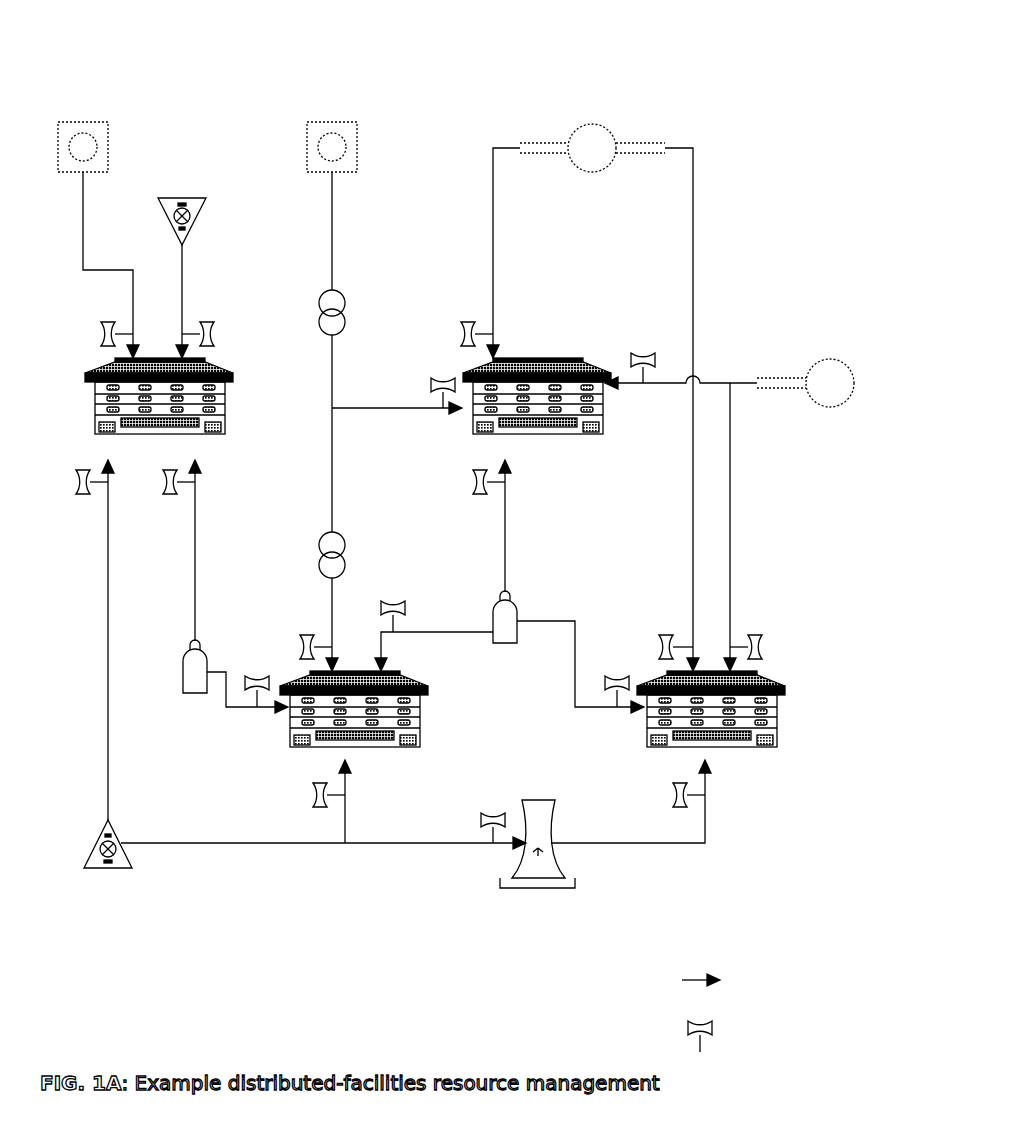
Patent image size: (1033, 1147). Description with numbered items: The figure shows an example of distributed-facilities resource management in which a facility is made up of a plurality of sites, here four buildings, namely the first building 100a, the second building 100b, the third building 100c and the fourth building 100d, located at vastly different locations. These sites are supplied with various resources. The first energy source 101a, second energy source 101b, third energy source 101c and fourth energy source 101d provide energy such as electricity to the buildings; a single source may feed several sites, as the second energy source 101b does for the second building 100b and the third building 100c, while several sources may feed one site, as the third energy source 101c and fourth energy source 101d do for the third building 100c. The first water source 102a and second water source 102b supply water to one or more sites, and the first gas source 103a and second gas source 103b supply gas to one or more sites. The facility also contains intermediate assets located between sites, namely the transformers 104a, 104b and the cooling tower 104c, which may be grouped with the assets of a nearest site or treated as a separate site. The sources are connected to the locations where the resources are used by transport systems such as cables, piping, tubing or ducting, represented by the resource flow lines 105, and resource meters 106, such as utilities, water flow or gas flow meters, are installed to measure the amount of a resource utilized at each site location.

The Building #1 100a is at (298, 441).
The Building #2 100b is at (497, 753).
The Building #3 100c is at (678, 444).
The Building #4 100d is at (849, 763).
The energy source #1 101a is at (83, 64).
The energy source #2 101b is at (354, 29).
The energy source #3 101c is at (611, 29).
The energy source #4 101d is at (841, 269).
The water source #1 102a is at (208, 109).
The water source #2 102b is at (106, 930).
The gas source 1 103a is at (197, 745).
The gas source 2 103b is at (587, 579).
The transformer 104a is at (313, 308).
The transformer 104b is at (313, 551).
The cooling tower 104c is at (536, 920).
The resource flow line 105 is at (848, 1003).
The resource meter 106 is at (815, 1061).